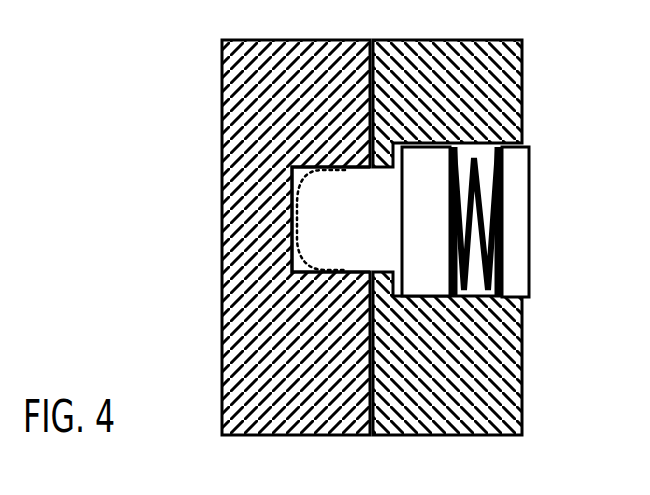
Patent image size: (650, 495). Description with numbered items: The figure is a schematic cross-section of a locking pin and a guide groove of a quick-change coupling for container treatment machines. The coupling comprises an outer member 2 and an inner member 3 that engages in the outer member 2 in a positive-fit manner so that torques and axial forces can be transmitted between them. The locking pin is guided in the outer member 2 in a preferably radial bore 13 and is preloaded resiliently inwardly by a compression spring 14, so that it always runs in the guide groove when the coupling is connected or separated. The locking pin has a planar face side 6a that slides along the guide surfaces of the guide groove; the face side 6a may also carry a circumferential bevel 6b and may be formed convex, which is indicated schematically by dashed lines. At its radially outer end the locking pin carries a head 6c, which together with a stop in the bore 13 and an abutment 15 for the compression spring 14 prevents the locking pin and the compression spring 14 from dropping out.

The outer member 2 is at (512, 113).
The inner member 3 is at (247, 75).
The face side 6a is at (298, 225).
The circumferential bevel 6b is at (293, 271).
The head 6c is at (427, 163).
The bore 13 is at (520, 320).
The compression spring 14 is at (480, 166).
The end plate 15 is at (522, 213).